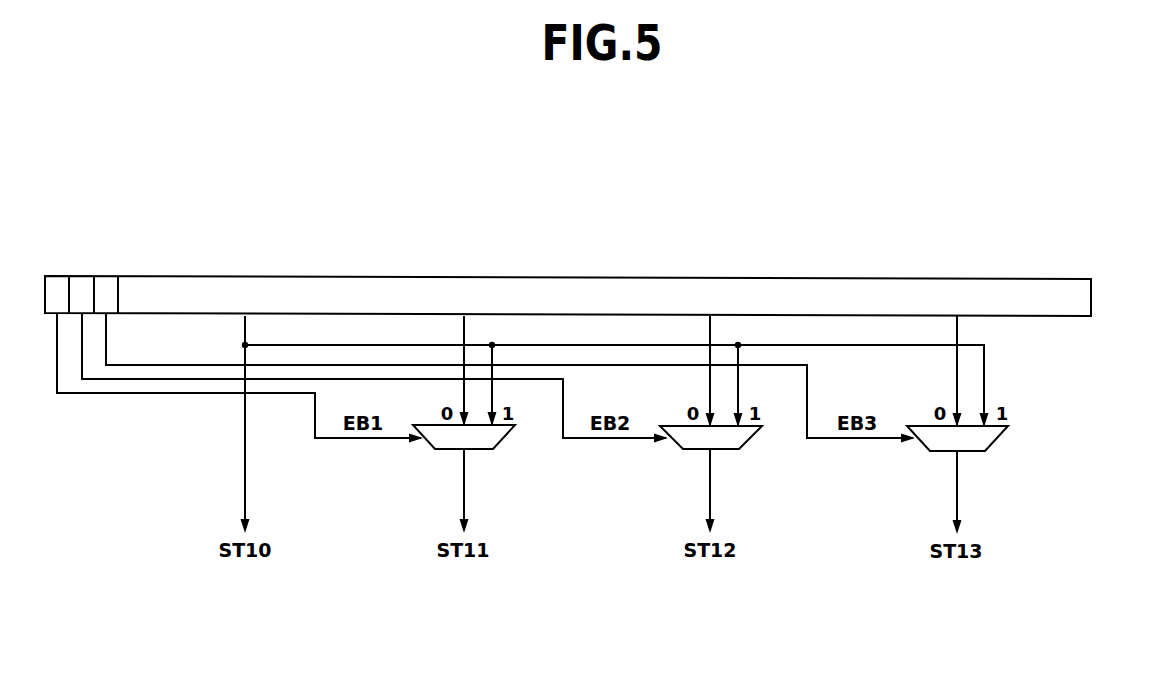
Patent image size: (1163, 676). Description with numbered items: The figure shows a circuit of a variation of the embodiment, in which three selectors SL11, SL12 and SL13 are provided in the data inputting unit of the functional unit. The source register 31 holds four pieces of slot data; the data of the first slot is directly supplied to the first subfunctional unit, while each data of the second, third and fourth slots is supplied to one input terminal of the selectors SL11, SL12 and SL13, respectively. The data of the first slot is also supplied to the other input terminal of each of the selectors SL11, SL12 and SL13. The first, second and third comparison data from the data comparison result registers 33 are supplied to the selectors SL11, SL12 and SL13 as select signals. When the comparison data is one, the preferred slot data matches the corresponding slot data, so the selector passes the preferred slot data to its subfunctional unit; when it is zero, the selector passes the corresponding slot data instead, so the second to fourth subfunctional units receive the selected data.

The source register 31 is at (1093, 298).
The data comparison result registers 33 is at (44, 273).
The selector SL11 is at (507, 436).
The selector SL12 is at (754, 437).
The selector SL13 is at (1000, 437).